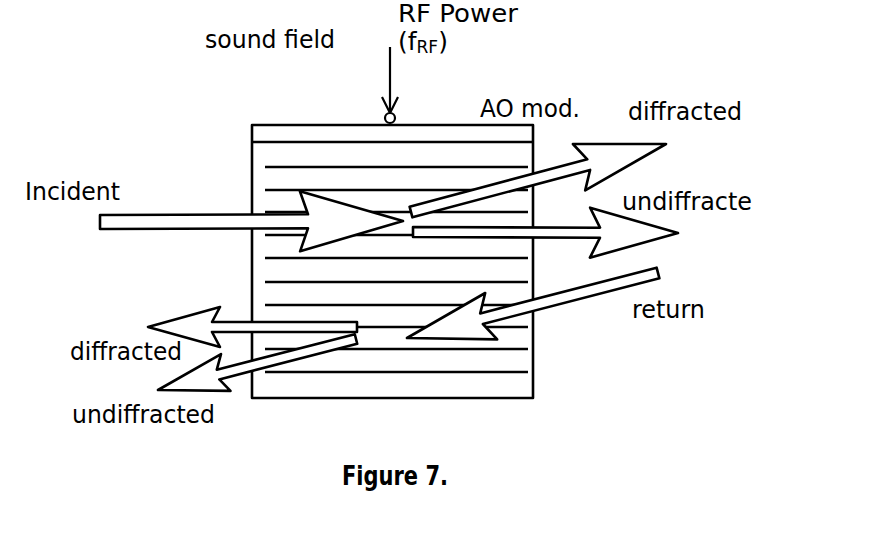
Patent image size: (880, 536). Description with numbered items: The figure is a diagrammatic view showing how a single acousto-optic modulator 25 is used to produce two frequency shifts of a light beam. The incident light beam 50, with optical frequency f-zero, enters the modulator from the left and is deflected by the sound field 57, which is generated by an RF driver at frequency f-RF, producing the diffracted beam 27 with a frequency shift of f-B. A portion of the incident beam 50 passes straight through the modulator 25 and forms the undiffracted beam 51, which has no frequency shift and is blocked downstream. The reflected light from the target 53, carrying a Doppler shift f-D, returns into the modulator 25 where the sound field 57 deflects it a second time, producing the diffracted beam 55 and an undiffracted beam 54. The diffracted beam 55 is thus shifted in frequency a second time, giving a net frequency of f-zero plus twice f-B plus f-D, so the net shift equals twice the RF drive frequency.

The acousto-optic modulator 25 is at (465, 125).
The sound field 57 is at (330, 153).
The incident light beam 50 is at (234, 221).
The diffracted beam 27 is at (556, 173).
The undiffracted beam 51 is at (562, 233).
The reflected light from the target 53 is at (552, 303).
The diffracted beam 55 is at (238, 325).
The undiffracted beam 54 is at (239, 367).